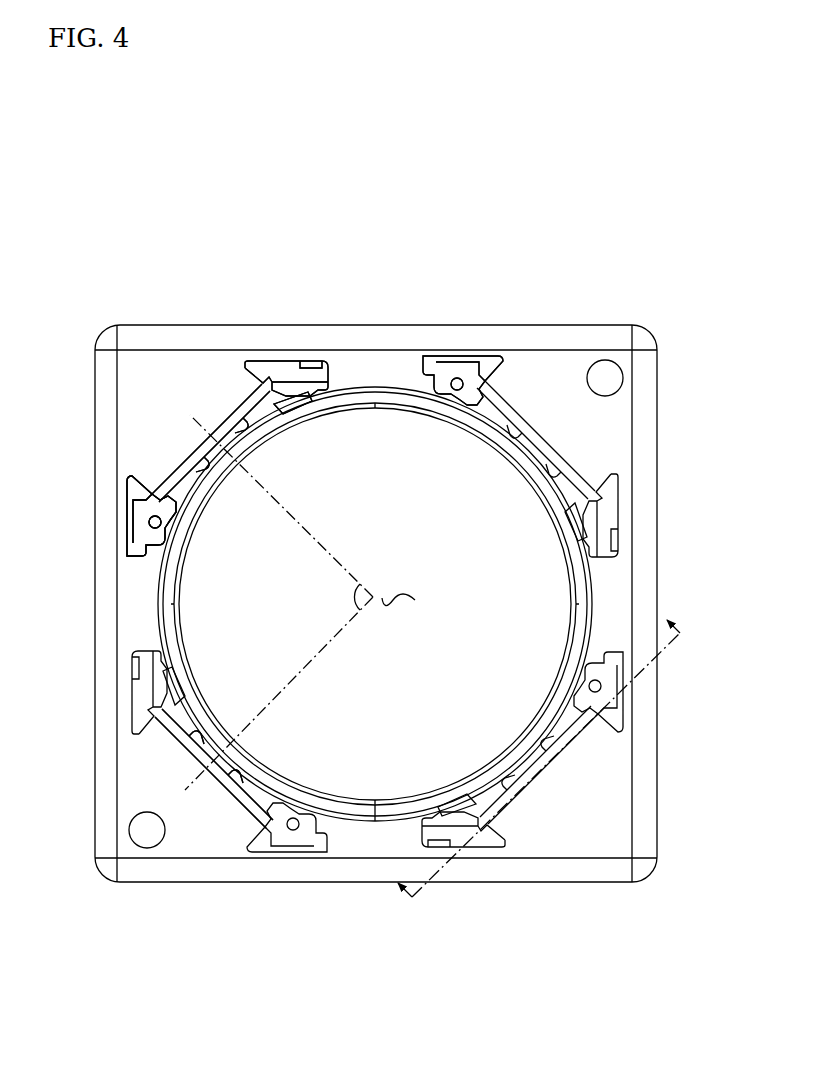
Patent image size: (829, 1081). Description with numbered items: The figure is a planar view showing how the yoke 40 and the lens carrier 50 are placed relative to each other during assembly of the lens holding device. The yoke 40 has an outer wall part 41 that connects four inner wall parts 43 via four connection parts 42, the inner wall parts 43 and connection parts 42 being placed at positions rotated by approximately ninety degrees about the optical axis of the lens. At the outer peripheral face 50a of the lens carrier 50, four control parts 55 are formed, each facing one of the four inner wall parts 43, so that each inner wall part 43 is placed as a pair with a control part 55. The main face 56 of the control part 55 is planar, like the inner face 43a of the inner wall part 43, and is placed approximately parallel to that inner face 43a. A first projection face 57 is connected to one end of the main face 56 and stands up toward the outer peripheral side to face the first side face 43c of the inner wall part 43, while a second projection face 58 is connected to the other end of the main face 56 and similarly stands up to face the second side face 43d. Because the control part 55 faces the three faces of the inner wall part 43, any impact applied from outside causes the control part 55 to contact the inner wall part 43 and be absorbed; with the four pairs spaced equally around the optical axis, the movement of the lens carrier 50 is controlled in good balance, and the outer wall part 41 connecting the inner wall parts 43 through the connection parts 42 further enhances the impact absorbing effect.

The yoke 40 is at (428, 318).
The outer wall part 41 is at (660, 408).
The connection parts 42 is at (165, 362).
The inner wall part 43 is at (212, 393).
The inner face 43a is at (195, 470).
The first side face 43c is at (142, 496).
The second side face 43d is at (268, 358).
The lens carrier 50 is at (447, 490).
The outer peripheral face 50a is at (490, 365).
The control part 55 is at (240, 757).
The main face 56 is at (268, 410).
The first projection face 57 is at (176, 512).
The second projection face 58 is at (283, 398).